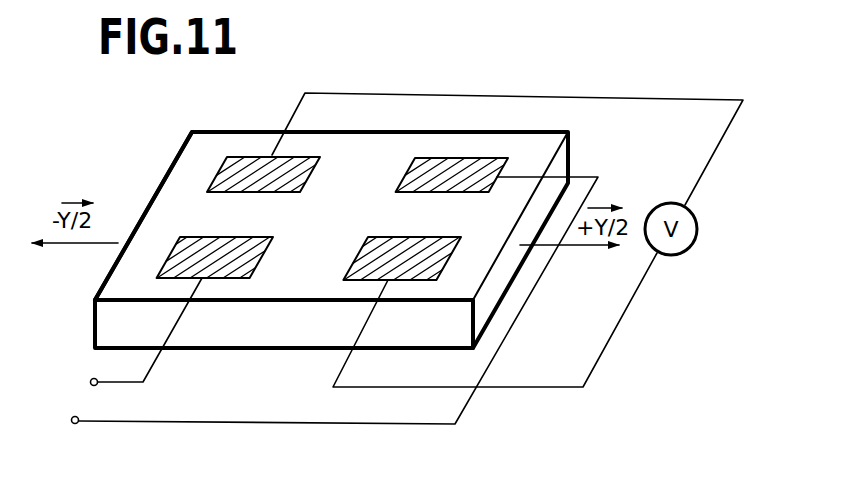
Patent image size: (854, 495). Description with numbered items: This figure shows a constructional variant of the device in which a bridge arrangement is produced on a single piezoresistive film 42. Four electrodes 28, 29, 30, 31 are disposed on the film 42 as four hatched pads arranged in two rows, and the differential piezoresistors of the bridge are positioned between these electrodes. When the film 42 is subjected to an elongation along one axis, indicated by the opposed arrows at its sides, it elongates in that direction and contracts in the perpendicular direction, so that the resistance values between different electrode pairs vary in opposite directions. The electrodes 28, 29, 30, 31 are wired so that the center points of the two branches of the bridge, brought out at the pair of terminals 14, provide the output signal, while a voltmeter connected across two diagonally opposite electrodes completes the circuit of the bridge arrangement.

The electrode 28 is at (241, 163).
The electrode 29 is at (446, 164).
The electrode 30 is at (238, 273).
The electrode 31 is at (418, 270).
The piezoresistive film 42 is at (503, 145).
The terminal pair M1 M2 14 is at (94, 386).